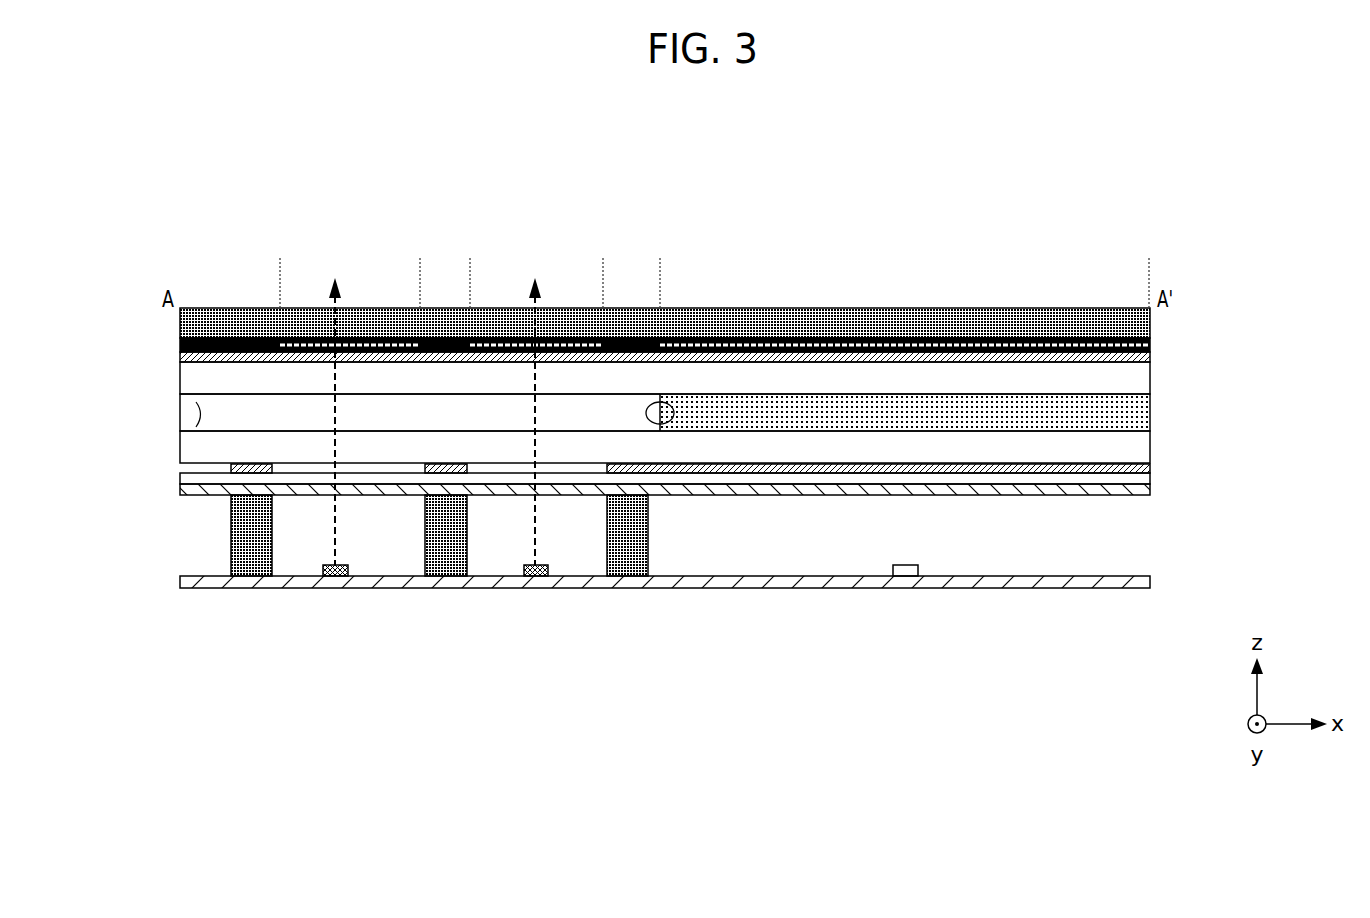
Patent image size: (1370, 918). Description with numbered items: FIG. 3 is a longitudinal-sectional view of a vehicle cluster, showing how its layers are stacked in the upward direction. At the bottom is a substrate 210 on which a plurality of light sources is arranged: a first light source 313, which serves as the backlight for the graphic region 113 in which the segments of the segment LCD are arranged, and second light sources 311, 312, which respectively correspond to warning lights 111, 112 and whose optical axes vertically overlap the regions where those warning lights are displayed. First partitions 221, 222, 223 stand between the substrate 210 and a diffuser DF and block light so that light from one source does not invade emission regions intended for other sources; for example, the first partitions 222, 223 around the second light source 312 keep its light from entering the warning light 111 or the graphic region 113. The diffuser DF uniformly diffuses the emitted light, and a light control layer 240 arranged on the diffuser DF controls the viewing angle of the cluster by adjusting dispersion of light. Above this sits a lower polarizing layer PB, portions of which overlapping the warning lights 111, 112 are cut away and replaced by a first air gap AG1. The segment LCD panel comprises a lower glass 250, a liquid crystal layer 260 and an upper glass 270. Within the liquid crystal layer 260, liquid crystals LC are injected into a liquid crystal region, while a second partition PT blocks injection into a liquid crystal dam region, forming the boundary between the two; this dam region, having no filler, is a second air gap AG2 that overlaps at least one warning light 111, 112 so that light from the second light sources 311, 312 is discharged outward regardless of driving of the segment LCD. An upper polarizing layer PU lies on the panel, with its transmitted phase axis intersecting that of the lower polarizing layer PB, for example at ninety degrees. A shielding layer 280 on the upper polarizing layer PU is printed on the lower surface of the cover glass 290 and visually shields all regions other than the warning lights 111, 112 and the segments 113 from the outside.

The cover glass 290 is at (1152, 323).
The shielding layer 280 is at (1152, 345).
The upper glass 270 is at (1152, 381).
The liquid crystal layer 260 is at (1152, 413).
The lower glass 250 is at (1152, 441).
The light control layer 240 is at (696, 503).
The substrate 210 is at (1152, 582).
The first partition 221 is at (257, 571).
The first partition 222 is at (451, 568).
The first partition 223 is at (633, 568).
The second light source 311 is at (337, 590).
The second light source 312 is at (535, 589).
The first light source 313 is at (907, 589).
The warning light 111 is at (280, 271).
The warning light 112 is at (603, 271).
The graphic region 113 is at (660, 271).
The upper polarizing layer PU is at (1152, 355).
The lower polarizing layer PB is at (1152, 468).
The diffuser DF is at (1152, 492).
The second partition PT is at (669, 424).
The liquid crystals LC is at (968, 410).
The first air gap AG1 is at (400, 468).
The second air gap AG2 is at (197, 414).